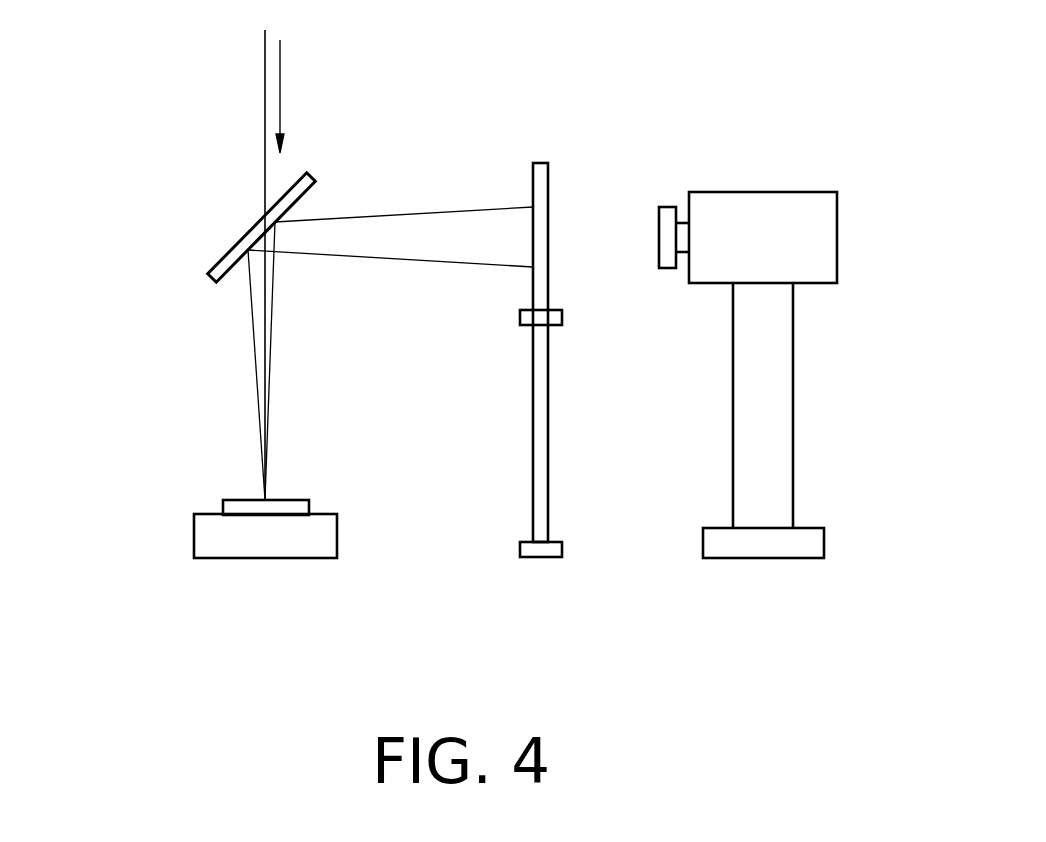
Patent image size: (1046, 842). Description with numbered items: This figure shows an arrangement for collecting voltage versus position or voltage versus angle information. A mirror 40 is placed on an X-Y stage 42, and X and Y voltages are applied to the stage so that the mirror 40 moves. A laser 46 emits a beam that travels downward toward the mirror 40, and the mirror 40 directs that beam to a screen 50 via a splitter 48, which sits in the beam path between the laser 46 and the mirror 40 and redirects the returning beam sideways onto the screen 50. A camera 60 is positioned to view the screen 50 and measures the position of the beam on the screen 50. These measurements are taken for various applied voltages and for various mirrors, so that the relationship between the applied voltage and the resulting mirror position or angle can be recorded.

The mirror 40 is at (223, 500).
The X-Y stage 42 is at (265, 558).
The laser 46 is at (230, 263).
The splitter 48 is at (318, 336).
The screen 50 is at (539, 323).
The camera 60 is at (748, 337).